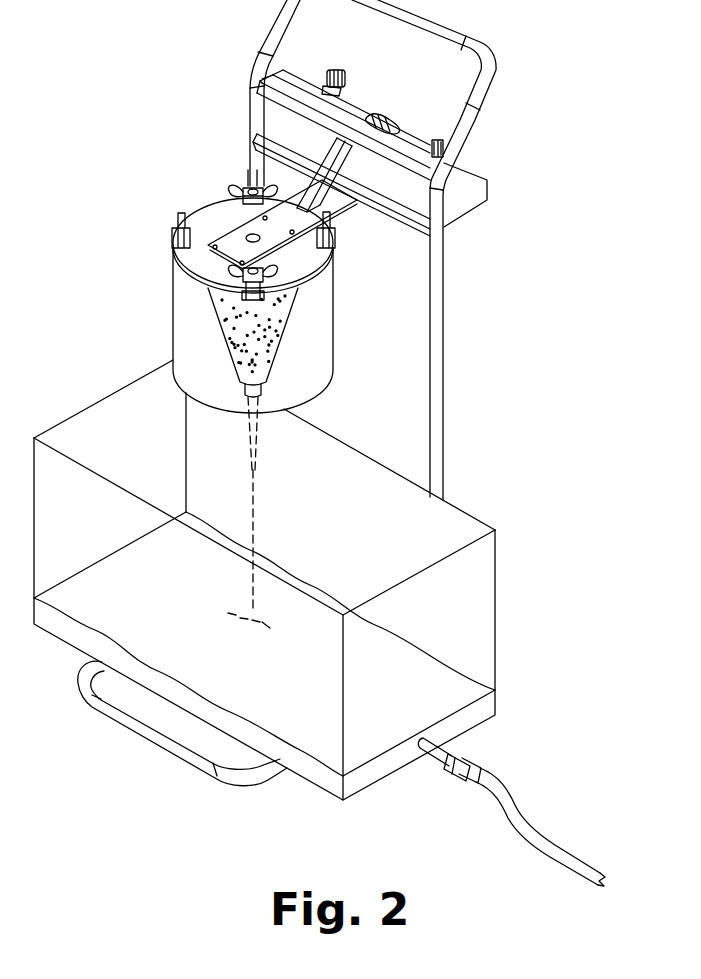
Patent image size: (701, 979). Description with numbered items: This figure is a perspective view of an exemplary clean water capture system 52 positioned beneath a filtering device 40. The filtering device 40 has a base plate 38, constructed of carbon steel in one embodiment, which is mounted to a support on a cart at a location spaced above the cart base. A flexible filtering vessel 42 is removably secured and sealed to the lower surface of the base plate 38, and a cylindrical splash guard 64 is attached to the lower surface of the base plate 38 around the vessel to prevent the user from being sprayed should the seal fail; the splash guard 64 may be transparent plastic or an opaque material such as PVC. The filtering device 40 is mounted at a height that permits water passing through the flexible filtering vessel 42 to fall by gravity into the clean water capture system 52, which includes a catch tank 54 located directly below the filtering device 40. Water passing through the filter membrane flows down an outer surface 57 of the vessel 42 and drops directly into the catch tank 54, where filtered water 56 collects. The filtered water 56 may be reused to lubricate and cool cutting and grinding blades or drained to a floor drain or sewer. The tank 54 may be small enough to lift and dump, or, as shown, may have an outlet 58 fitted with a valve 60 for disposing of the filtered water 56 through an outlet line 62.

The base plate 38 is at (206, 218).
The filtering device 40 is at (352, 291).
The flexible filtering vessel 42 is at (240, 344).
The clean water capture system 52 is at (512, 724).
The catch tank 54 is at (460, 688).
The filtered water 56 is at (267, 320).
The outer surface 57 is at (323, 723).
The outlet 58 is at (421, 752).
The valve 60 is at (466, 760).
The outlet line 62 is at (543, 842).
The cylindrical splash guard 64 is at (190, 330).